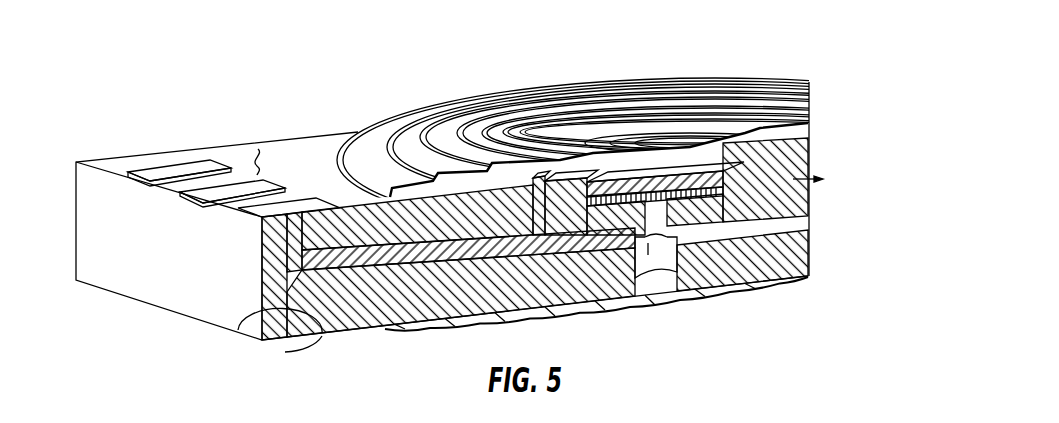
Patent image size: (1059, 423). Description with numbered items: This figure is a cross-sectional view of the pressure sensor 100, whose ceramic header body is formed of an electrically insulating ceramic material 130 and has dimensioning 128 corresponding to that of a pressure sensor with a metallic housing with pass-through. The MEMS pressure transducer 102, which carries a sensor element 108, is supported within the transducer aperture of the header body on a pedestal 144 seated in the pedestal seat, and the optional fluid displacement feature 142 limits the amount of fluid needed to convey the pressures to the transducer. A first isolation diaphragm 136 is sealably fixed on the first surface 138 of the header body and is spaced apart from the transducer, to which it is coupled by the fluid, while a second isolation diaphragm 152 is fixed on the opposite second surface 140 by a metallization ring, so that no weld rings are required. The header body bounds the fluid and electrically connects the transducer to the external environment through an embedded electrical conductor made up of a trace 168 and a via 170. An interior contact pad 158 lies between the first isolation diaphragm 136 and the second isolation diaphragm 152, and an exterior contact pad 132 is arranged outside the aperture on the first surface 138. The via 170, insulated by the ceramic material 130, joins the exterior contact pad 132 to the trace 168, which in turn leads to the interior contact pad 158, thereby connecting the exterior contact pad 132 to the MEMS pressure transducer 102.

The pressure sensor 100 is at (142, 351).
The MEMS pressure transducer 102 is at (748, 184).
The sensor element 108 is at (688, 165).
The dimensioning 128 is at (327, 135).
The ceramic material 130 is at (425, 292).
The exterior contact pad 132 is at (281, 205).
The first isolation diaphragm 136 is at (585, 103).
The first surface 138 is at (257, 200).
The second surface 140 is at (263, 310).
The fluid displacement feature 142 is at (499, 322).
The pedestal 144 is at (625, 300).
The second isolation diaphragm 152 is at (753, 282).
The interior contact pad 158 is at (540, 170).
The trace 168 is at (352, 287).
The via 170 is at (340, 238).